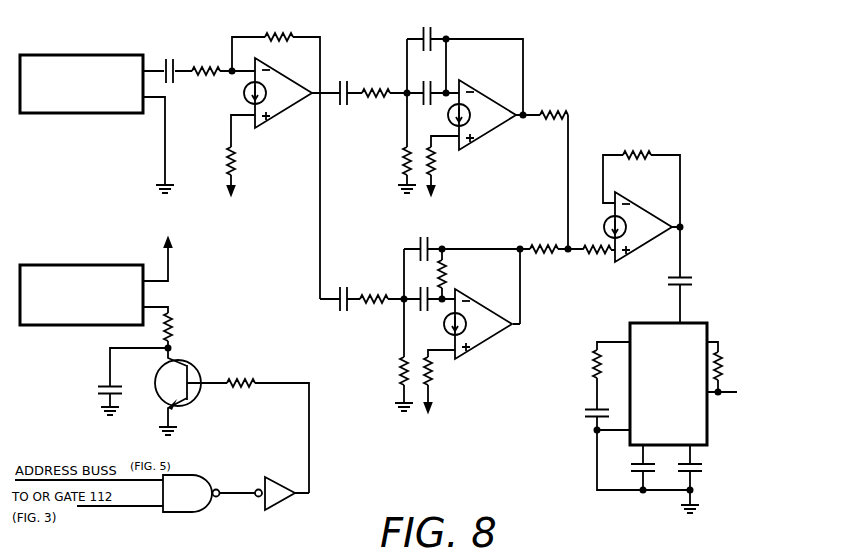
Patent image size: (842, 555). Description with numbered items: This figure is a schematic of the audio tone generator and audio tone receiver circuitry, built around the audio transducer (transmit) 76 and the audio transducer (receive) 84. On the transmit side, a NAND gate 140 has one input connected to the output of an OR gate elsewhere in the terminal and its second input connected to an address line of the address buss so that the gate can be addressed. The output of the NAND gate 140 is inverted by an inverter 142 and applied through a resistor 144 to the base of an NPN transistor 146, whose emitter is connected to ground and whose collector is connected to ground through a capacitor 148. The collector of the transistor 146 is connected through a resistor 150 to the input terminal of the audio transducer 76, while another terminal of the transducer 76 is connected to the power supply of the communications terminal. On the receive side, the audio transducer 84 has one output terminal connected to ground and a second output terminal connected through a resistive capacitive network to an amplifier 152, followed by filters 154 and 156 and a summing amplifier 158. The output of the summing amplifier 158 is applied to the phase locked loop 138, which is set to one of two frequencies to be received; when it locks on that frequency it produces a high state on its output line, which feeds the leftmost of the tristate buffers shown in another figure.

The audio transducer (receive) 84 is at (105, 67).
The audio transducer (transmit) 76 is at (98, 273).
The amplifier 152 is at (287, 98).
The filter 154 is at (485, 118).
The filter 156 is at (480, 323).
The summing amplifier 158 is at (642, 230).
The phase locked loop 138 is at (700, 323).
The resistor 150 is at (175, 315).
The capacitor 148 is at (107, 385).
The NPN transistor 146 is at (184, 360).
The resistor 144 is at (246, 376).
The NAND gate 140 is at (187, 482).
The inverter 142 is at (274, 488).